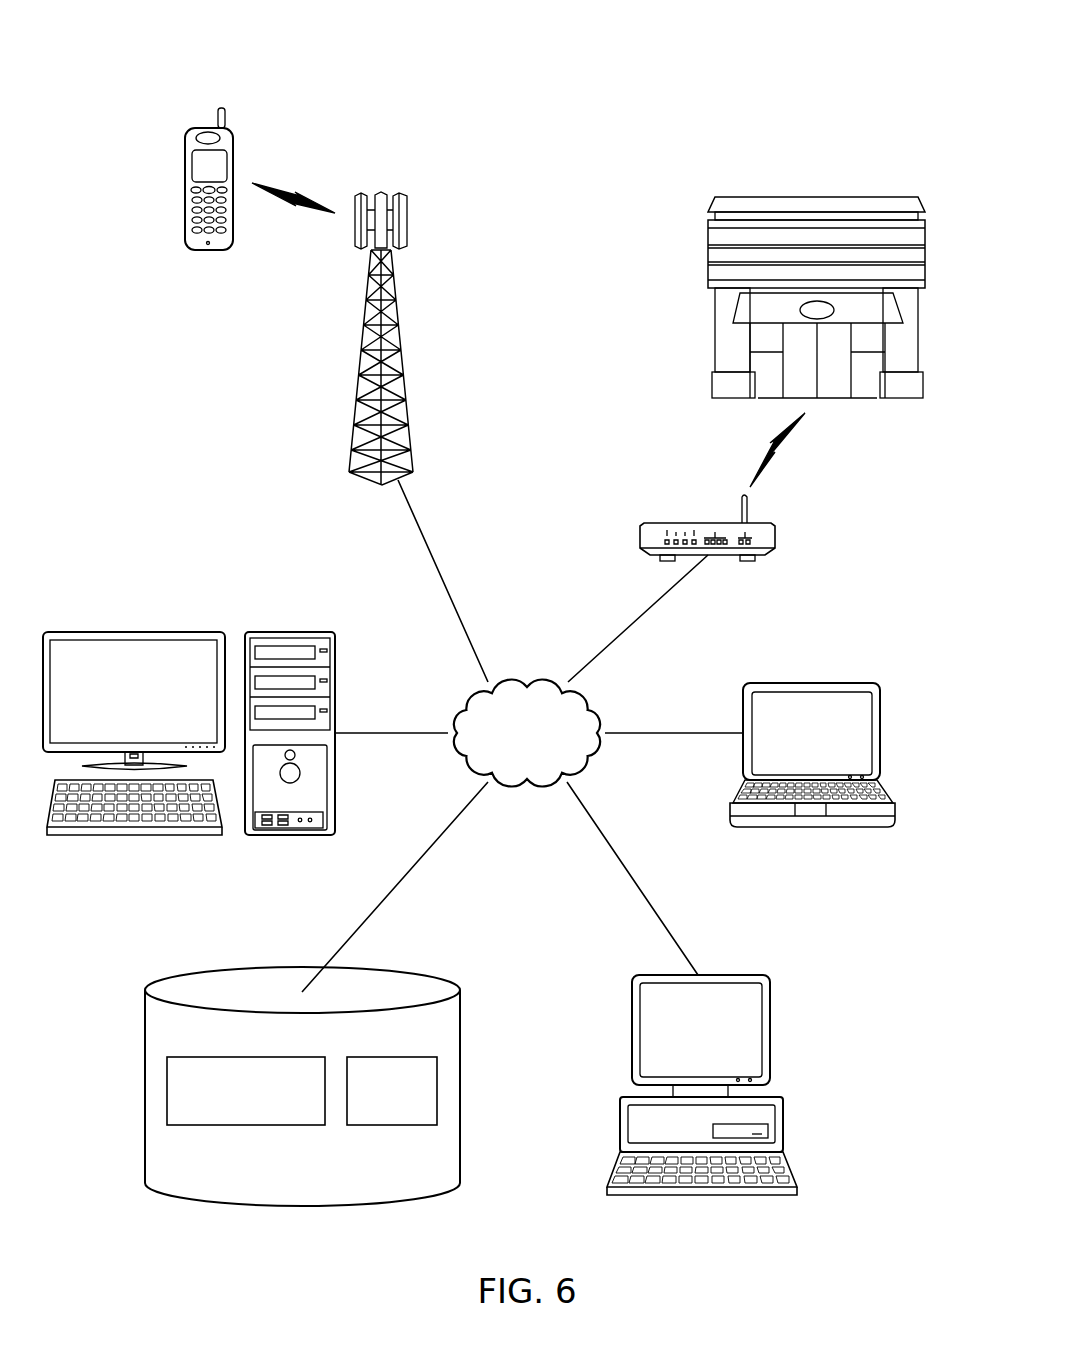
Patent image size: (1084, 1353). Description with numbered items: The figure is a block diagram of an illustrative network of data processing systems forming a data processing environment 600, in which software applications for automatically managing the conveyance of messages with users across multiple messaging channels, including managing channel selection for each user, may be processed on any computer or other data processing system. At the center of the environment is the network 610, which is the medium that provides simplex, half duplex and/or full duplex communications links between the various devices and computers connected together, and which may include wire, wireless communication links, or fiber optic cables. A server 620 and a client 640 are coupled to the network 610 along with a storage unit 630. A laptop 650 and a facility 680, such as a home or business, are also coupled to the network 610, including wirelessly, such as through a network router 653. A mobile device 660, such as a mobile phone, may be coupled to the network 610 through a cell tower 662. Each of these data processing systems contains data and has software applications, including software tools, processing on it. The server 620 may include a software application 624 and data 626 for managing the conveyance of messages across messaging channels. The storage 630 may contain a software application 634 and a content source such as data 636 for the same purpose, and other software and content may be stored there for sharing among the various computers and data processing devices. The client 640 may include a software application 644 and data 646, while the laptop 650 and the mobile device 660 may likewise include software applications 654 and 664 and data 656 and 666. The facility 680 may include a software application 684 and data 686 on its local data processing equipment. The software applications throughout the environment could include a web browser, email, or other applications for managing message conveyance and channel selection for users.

The data processing environment 600 is at (400, 58).
The network 610 is at (523, 678).
The server 620 is at (225, 734).
The software application 624 is at (290, 632).
The data 626 is at (337, 777).
The storage unit 630 is at (302, 1118).
The software application 634 is at (247, 1127).
The data 636 is at (393, 1127).
The client 640 is at (714, 1112).
The software application 644 is at (786, 1125).
The data 646 is at (632, 1029).
The laptop 650 is at (811, 783).
The network router 653 is at (777, 537).
The software application 654 is at (815, 828).
The data 656 is at (889, 798).
The mobile device 660 is at (193, 179).
The cell tower 662 is at (360, 362).
The software application 664 is at (185, 182).
The data 666 is at (234, 156).
The facility 680 is at (768, 269).
The software application 684 is at (715, 330).
The data 686 is at (762, 193).